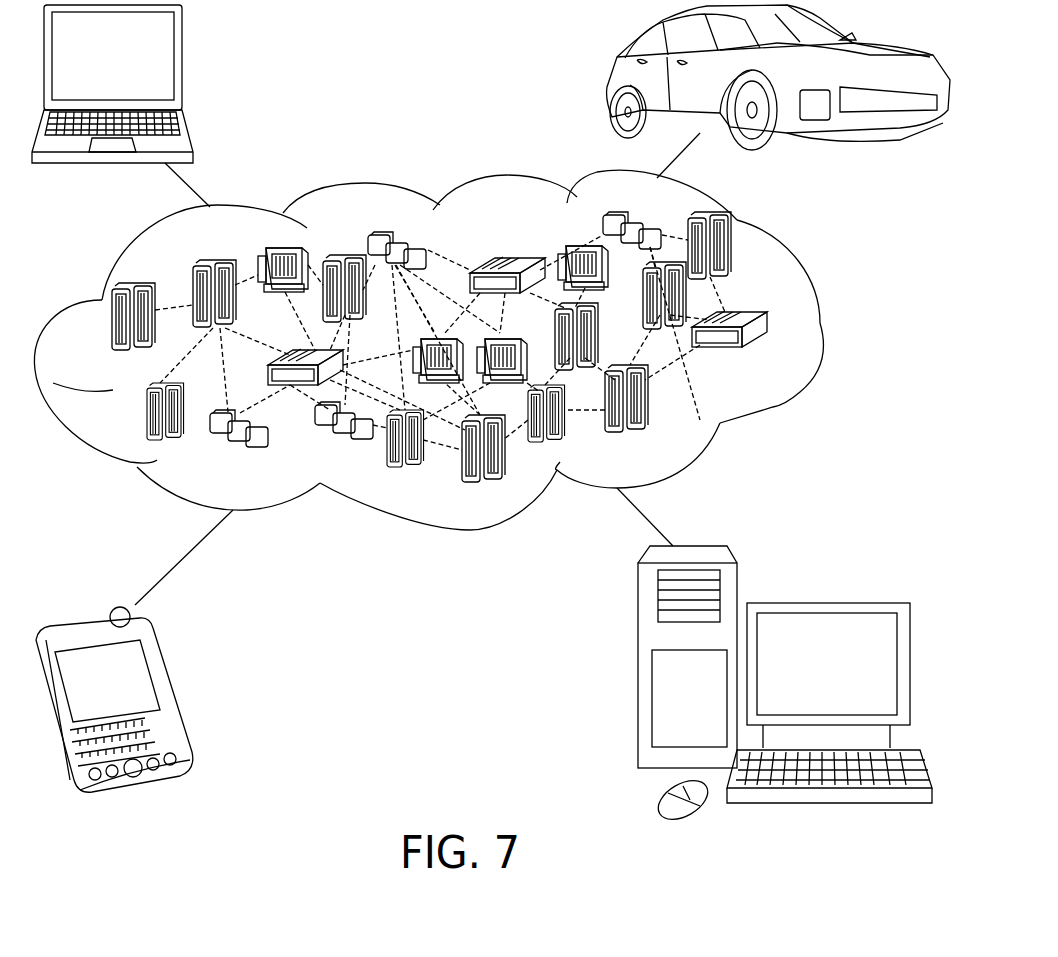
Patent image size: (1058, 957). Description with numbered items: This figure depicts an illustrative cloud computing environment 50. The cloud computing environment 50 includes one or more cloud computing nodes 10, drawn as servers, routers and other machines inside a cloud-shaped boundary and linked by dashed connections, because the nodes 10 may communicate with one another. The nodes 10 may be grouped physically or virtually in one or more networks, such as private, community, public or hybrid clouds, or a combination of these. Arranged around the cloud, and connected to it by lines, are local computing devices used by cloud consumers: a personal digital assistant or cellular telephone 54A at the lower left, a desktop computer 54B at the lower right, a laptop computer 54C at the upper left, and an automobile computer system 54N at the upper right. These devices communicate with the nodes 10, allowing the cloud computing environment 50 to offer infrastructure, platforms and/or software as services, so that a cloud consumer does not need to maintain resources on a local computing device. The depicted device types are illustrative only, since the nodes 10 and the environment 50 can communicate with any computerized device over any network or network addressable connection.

The laptop computer 54C is at (180, 63).
The automobile computer system 54N is at (612, 80).
The personal digital assistant or cellular telephone 54A is at (170, 693).
The desktop computer 54B is at (823, 601).
The cloud computing environment 50 is at (457, 387).
The cloud computing node 10 is at (768, 356).